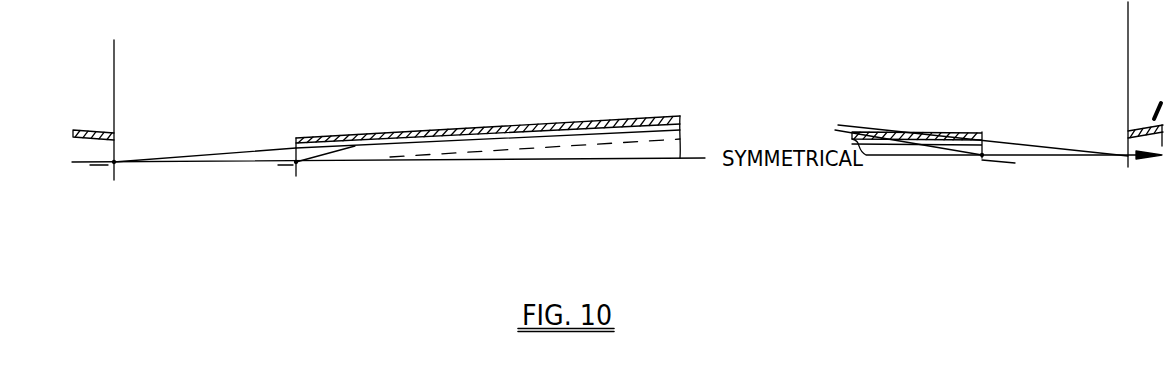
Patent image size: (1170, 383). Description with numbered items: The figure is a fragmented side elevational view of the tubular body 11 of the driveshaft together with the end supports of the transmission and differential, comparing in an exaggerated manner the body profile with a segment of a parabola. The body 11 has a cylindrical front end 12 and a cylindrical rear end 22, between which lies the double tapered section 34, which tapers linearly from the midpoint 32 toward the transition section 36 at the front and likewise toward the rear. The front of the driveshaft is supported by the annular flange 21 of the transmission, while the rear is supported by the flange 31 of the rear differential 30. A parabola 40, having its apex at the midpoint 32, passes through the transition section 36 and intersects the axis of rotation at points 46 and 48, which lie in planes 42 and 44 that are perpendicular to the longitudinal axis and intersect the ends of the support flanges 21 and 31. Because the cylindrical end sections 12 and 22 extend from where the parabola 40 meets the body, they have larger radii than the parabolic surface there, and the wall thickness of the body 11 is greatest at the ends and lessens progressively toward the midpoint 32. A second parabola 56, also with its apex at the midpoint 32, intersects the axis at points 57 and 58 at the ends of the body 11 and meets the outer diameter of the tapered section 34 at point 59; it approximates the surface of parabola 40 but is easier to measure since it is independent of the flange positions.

The tubular body 11 is at (580, 118).
The front end 12 is at (304, 139).
The annular flange 21 is at (114, 137).
The rear end 22 is at (967, 132).
The rear differential 30 is at (1160, 104).
The flange 31 is at (1130, 130).
The midpoint 32 is at (680, 117).
The double tapered section 34 is at (512, 125).
The transition section 36 is at (380, 138).
The parabola 40 is at (192, 154).
The plane 42 is at (114, 65).
The plane 44 is at (1128, 65).
The point 46 is at (116, 160).
The point 48 is at (1128, 158).
The parabola 56 is at (345, 152).
The point 57 is at (293, 163).
The point 58 is at (982, 156).
The point 59 is at (453, 132).